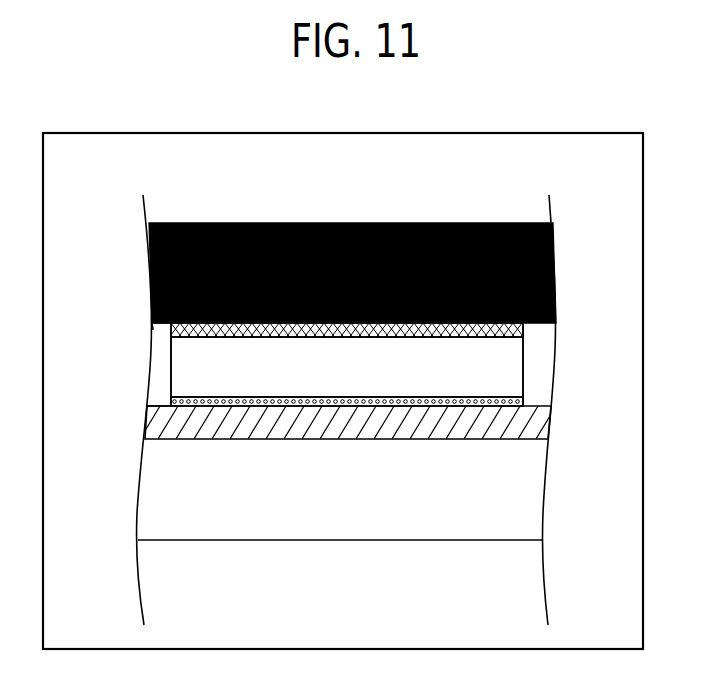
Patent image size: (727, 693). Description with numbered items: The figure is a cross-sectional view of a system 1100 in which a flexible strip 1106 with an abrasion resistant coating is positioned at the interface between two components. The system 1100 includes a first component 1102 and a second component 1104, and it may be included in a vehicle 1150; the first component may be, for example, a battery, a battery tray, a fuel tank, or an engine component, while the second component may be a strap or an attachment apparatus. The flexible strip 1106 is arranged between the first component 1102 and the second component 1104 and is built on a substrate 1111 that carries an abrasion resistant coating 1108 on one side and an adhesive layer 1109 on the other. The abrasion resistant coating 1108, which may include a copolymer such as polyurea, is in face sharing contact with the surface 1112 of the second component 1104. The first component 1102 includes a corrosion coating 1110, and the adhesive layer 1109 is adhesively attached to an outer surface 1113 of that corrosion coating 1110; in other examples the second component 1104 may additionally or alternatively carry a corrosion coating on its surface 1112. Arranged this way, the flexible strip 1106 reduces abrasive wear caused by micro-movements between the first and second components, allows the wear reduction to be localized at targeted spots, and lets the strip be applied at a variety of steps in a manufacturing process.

The vehicle 1150 is at (51, 133).
The system 1100 is at (352, 203).
The first component 1102 is at (362, 503).
The second component 1104 is at (343, 295).
The flexible strip 1106 is at (540, 380).
The abrasion resistant coating 1108 is at (514, 333).
The adhesive layer 1109 is at (512, 400).
The corrosion coating 1110 is at (161, 429).
The substrate 1111 is at (318, 379).
The surface 1112 is at (158, 326).
The outer surface 1113 is at (158, 398).